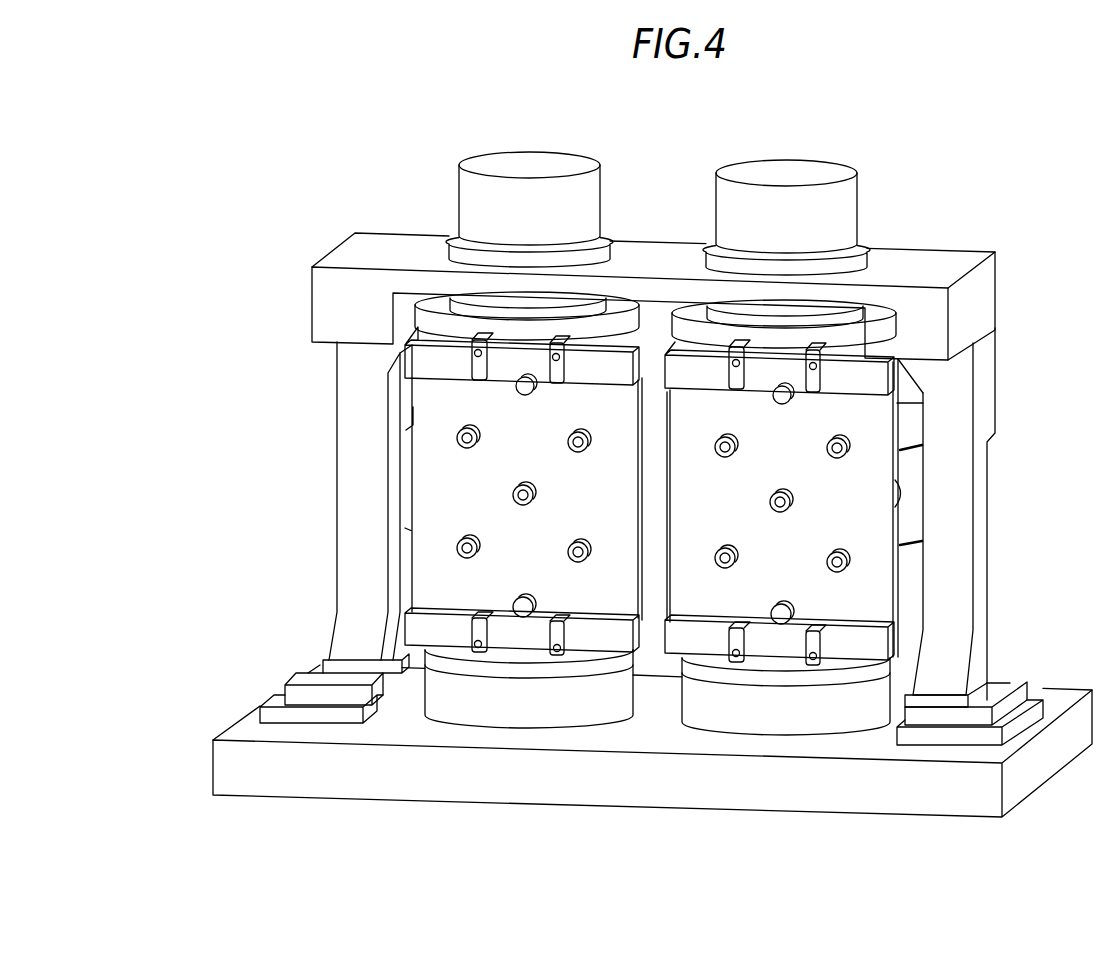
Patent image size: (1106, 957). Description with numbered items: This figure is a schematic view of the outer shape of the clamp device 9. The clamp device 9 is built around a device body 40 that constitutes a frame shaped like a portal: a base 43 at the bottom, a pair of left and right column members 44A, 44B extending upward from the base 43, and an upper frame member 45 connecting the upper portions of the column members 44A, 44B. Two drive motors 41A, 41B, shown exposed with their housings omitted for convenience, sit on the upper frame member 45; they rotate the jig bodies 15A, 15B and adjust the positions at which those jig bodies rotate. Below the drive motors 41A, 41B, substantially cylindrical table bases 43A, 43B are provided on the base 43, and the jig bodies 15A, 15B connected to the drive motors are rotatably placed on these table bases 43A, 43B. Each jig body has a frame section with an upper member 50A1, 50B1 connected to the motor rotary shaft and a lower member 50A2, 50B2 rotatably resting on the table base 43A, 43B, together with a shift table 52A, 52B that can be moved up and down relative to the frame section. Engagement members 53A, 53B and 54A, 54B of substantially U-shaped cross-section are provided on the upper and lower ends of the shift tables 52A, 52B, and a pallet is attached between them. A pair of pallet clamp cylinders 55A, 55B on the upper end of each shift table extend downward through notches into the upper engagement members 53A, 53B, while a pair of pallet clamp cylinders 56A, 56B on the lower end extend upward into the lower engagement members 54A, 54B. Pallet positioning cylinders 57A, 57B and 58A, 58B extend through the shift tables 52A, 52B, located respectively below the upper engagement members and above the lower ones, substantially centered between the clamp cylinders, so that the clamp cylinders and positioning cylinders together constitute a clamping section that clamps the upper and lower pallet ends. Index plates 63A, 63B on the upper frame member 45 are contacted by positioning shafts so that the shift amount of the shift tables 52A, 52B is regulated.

The clamp device 9 is at (1033, 175).
The jig body 15A is at (437, 502).
The jig body 15B is at (862, 492).
The device body 40 is at (276, 818).
The drive motor 41A is at (525, 162).
The drive motor 41B is at (778, 162).
The base 43 is at (472, 783).
The table base 43A is at (472, 705).
The table base 43B is at (735, 712).
The column member 44A is at (350, 533).
The column member 44B is at (957, 540).
The upper frame member 45 is at (352, 262).
The upper member 50A1 is at (448, 322).
The lower member 50A2 is at (543, 675).
The upper member 50B1 is at (748, 338).
The lower member 50B2 is at (713, 675).
The shift table 52A is at (437, 466).
The shift table 52B is at (873, 430).
The engagement member 53A is at (418, 368).
The engagement member 53B is at (923, 397).
The engagement member 54A is at (420, 632).
The engagement member 54B is at (865, 643).
The pallet clamp cylinder 55A is at (473, 352).
The pallet clamp cylinder 55B is at (815, 355).
The pallet clamp cylinder 56A is at (556, 660).
The pallet clamp cylinder 56B is at (733, 660).
The pallet positioning cylinder 57A is at (513, 392).
The pallet positioning cylinder 57B is at (792, 398).
The pallet positioning cylinder 58A is at (520, 607).
The pallet positioning cylinder 58B is at (800, 611).
The index plate 63A is at (473, 303).
The index plate 63B is at (725, 313).